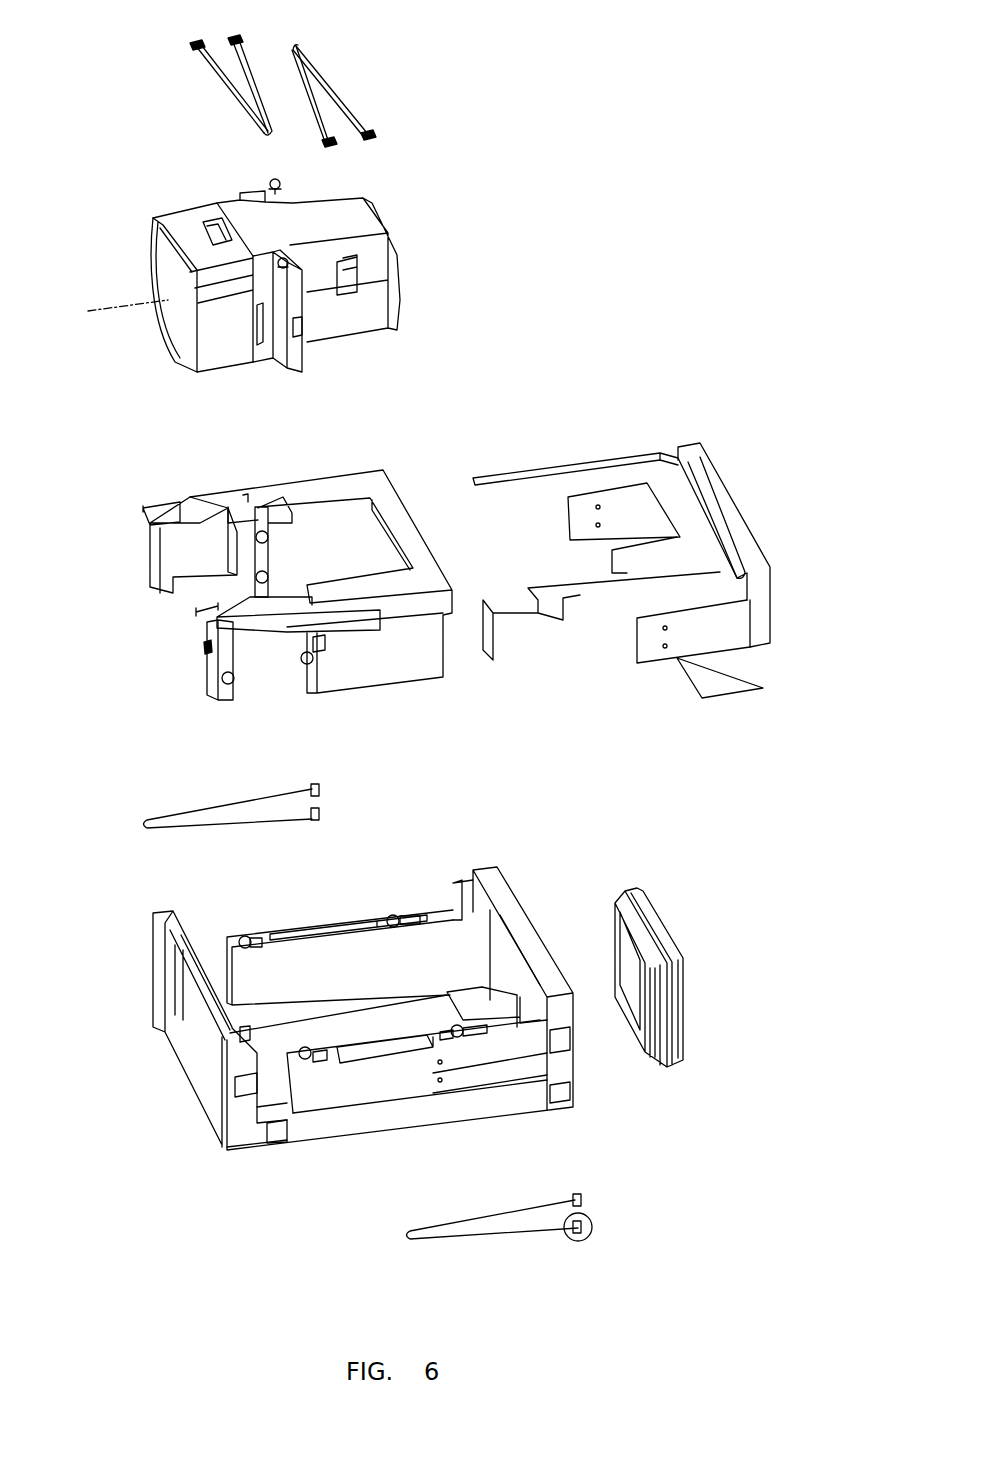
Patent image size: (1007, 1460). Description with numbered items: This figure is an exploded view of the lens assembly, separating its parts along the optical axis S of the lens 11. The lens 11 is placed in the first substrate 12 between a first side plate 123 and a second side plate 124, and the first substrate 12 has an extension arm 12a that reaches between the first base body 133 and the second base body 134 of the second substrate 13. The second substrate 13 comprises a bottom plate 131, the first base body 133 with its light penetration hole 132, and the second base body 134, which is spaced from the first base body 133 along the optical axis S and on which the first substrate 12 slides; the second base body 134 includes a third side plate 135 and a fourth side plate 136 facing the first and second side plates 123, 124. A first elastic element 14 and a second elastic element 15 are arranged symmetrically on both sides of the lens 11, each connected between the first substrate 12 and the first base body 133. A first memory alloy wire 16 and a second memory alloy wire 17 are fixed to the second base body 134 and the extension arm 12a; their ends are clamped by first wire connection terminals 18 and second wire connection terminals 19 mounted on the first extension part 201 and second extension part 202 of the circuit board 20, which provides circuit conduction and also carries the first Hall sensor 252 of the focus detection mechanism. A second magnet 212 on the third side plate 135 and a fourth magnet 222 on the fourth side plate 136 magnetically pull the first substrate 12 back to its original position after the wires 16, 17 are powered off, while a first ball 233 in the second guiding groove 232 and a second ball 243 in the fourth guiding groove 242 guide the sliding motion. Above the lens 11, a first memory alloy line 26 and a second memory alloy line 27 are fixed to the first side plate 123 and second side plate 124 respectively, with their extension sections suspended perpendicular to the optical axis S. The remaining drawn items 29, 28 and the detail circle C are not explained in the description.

The screw 29 is at (194, 45).
The second memory alloy line 27 is at (238, 110).
The first memory alloy line 26 is at (330, 80).
The screw 28 is at (370, 130).
The lens 11 is at (185, 215).
The optical axis S is at (170, 300).
The first substrate 12 is at (385, 495).
The second side plate 124 is at (240, 492).
The second elastic element 15 is at (165, 508).
The first elastic element 14 is at (196, 612).
The first Hall sensor 252 is at (204, 646).
The first side plate 123 is at (252, 635).
The extension arm 12a is at (222, 690).
The circuit board 20 is at (715, 505).
The second extension part 202 is at (612, 515).
The first extension part 201 is at (702, 634).
The second memory alloy wire 17 is at (222, 805).
The second wire connection terminal 19 is at (312, 787).
The second substrate 13 is at (520, 928).
The fourth side plate 136 is at (303, 962).
The fourth magnet 222 is at (305, 928).
The second ball 243 is at (398, 916).
The fourth guiding groove 242 is at (415, 920).
The light penetration hole 132 is at (208, 1037).
The first base body 133 is at (232, 1083).
The second base body 134 is at (325, 1092).
The bottom plate 131 is at (350, 1125).
The third side plate 135 is at (368, 1080).
The second magnet 212 is at (405, 1055).
The first ball 233 is at (465, 1040).
The second guiding groove 232 is at (488, 1035).
The first memory alloy wire 16 is at (488, 1237).
The first wire connection terminal 18 is at (583, 1238).
The detail circle C is at (596, 1223).